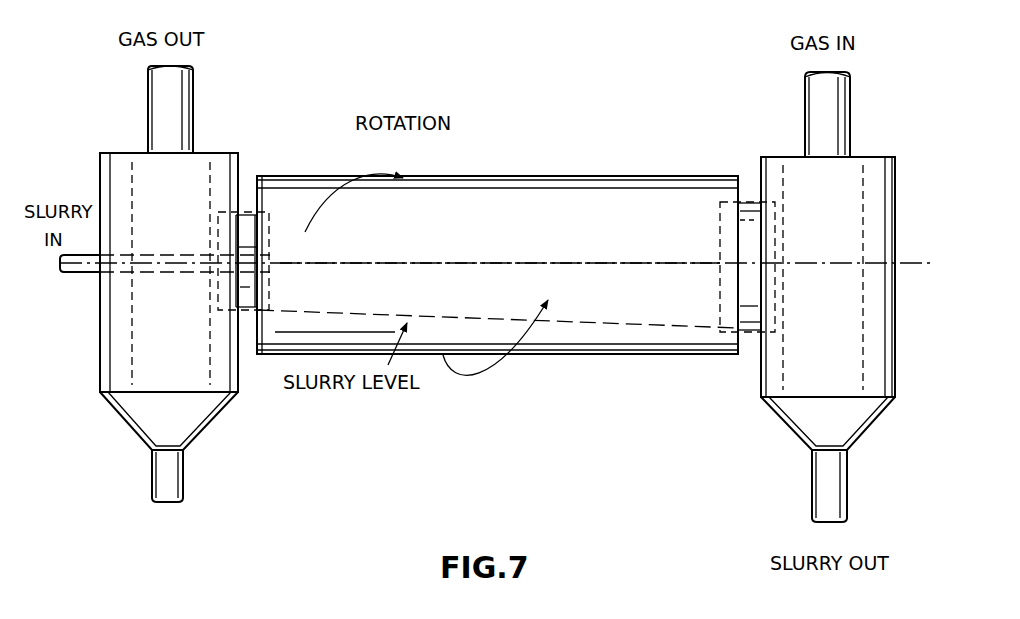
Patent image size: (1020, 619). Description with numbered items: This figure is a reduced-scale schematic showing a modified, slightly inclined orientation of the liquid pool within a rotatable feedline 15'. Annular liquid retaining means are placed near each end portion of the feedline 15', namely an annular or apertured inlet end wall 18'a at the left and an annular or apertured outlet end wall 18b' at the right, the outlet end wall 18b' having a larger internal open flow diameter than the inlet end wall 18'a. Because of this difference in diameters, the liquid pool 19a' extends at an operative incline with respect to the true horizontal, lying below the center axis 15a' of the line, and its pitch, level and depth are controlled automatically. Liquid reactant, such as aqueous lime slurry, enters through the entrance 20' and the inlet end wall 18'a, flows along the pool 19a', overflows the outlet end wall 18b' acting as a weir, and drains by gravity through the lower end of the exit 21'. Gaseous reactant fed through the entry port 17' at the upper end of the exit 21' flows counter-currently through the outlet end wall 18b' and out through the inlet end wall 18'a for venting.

The feedline 15' is at (497, 243).
The center axis 15a' is at (500, 240).
The entry port 17' is at (867, 114).
The inlet end wall 18'a is at (275, 222).
The outlet end wall 18b' is at (701, 265).
The liquid pool 19a' is at (498, 322).
The entrance 20' is at (165, 241).
The exit 21' is at (827, 339).